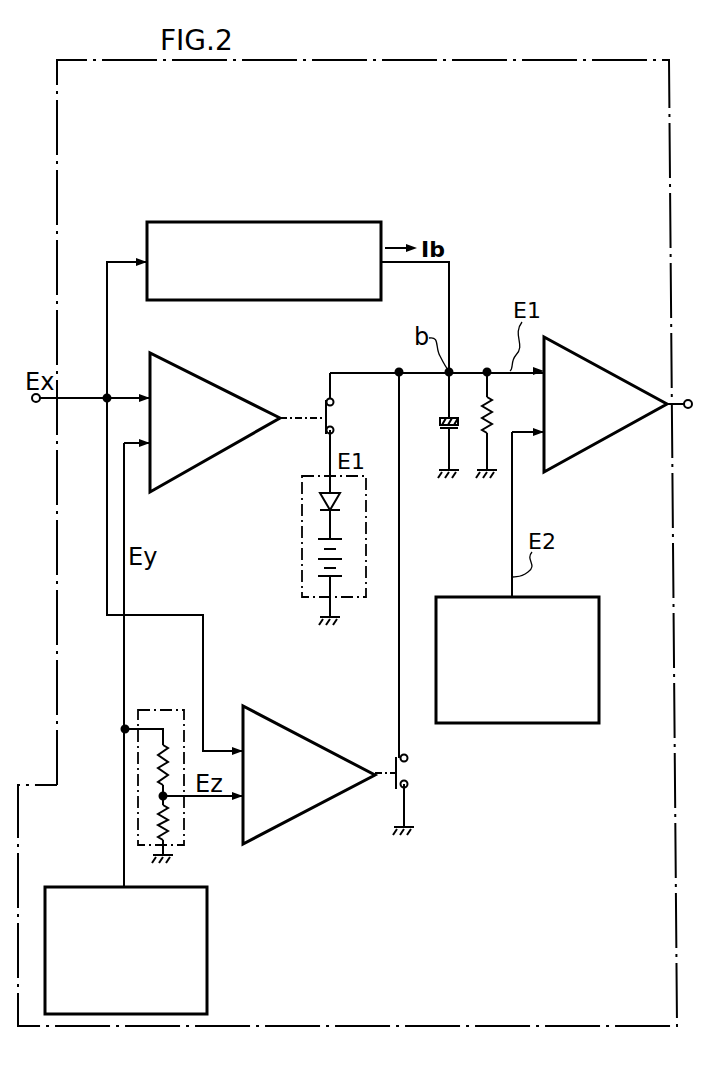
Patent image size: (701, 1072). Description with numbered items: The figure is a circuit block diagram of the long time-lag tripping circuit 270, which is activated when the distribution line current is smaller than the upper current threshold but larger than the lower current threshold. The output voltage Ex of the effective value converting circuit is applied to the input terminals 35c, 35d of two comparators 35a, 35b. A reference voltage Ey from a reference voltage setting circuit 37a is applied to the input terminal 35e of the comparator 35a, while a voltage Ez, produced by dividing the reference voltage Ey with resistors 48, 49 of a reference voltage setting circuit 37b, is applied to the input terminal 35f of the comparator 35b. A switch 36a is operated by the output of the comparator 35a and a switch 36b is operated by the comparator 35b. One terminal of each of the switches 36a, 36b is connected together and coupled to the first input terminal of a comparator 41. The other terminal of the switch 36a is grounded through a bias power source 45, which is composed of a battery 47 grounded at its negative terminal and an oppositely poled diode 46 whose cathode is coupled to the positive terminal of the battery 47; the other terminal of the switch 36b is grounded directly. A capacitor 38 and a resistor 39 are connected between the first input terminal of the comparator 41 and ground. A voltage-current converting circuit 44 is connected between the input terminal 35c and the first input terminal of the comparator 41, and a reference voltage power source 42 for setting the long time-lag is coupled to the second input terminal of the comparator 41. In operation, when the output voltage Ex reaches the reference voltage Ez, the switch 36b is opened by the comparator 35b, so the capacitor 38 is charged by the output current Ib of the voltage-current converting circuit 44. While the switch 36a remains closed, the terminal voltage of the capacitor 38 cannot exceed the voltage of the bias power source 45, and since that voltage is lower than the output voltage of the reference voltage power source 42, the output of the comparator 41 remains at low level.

The long time-lag tripping circuit 270 is at (436, 59).
The voltage-current converting circuit 44 is at (194, 222).
The comparator 35a is at (204, 378).
The comparator 35b is at (302, 738).
The input terminal 35c is at (130, 396).
The input terminal 35d is at (214, 750).
The input terminal 35e is at (136, 450).
The input terminal 35f is at (216, 800).
The switch 36a is at (320, 408).
The switch 36b is at (393, 772).
The reference voltage setting circuit 37a is at (100, 887).
The reference voltage setting circuit 37b is at (172, 708).
The capacitor 38 is at (440, 430).
The resistor 39 is at (487, 370).
The comparator 41 is at (600, 360).
The reference voltage power source 42 is at (506, 723).
The bias power source 45 is at (304, 476).
The diode 46 is at (322, 506).
The battery 47 is at (322, 560).
The resistor 48 is at (160, 786).
The resistor 49 is at (170, 822).